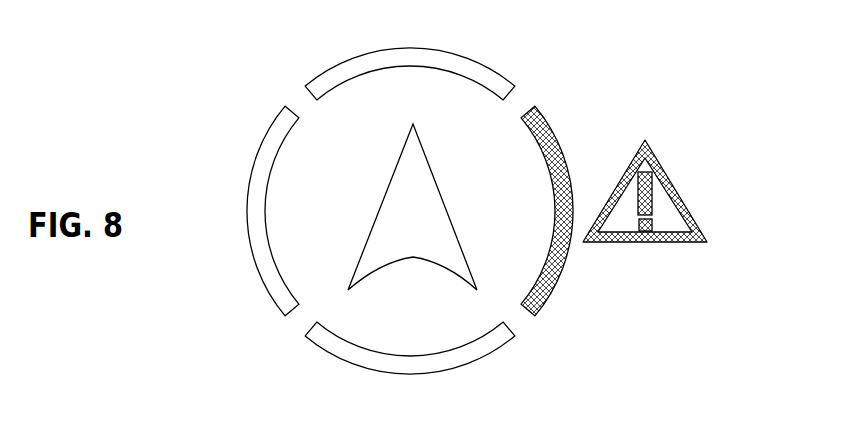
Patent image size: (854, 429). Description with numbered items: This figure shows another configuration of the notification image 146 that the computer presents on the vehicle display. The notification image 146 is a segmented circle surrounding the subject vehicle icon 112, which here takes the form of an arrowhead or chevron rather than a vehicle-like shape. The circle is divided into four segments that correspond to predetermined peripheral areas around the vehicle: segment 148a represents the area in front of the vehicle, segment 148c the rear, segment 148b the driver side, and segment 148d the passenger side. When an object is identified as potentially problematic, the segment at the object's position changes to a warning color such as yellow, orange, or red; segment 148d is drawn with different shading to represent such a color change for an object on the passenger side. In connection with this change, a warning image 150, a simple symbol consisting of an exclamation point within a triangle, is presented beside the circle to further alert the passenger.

The subject vehicle icon 112 is at (405, 185).
The notification image 146 is at (402, 209).
The segment 148a is at (427, 55).
The segment 148b is at (262, 153).
The segment 148c is at (400, 367).
The segment 148d is at (543, 290).
The warning image 150 is at (675, 190).